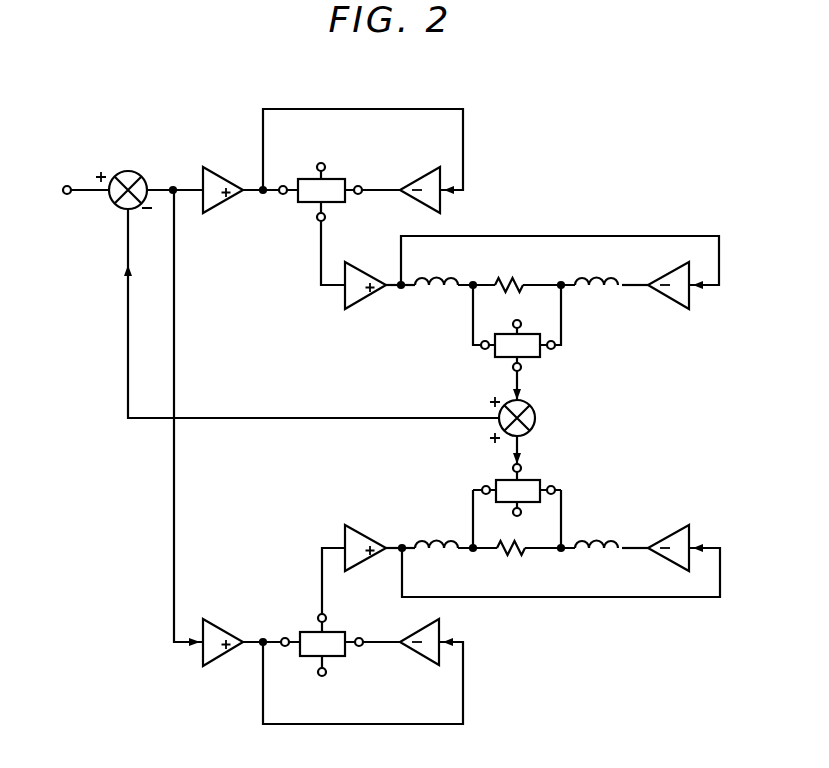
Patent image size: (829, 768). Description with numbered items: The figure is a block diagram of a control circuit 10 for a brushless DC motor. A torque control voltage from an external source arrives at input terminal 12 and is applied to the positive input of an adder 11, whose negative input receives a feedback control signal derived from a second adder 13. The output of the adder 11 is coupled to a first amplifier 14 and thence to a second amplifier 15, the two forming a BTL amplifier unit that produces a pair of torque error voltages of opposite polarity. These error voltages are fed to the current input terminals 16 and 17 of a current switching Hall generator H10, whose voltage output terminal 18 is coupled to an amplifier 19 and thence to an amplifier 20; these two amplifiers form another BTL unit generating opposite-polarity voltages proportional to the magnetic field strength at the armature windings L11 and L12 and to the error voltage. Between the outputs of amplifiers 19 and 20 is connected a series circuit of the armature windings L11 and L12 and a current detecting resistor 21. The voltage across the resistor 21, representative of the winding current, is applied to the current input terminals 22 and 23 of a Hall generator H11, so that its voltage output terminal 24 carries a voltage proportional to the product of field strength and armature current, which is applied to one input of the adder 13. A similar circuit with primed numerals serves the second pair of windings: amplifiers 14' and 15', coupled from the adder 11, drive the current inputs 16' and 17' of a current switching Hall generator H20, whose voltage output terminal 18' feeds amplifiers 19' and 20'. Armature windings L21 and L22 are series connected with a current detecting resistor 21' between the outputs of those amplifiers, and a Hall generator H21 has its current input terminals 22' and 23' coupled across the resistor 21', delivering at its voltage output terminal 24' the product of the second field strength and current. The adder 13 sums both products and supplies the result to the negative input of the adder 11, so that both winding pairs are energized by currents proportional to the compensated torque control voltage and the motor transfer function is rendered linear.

The control circuit 10 is at (302, 93).
The adder 11 is at (138, 178).
The input terminal 12 is at (67, 195).
The second adder 13 is at (535, 418).
The first amplifier 14 is at (223, 178).
The second amplifier 15 is at (419, 178).
The current input terminal 16 is at (283, 168).
The current input terminal 17 is at (358, 168).
The voltage output terminal 18 is at (340, 227).
The current switching Hall generator H10 is at (302, 202).
The amplifier 19 is at (367, 296).
The amplifier 20 is at (665, 296).
The current detecting resistor 21 is at (509, 270).
The armature winding L11 is at (436, 290).
The armature winding L12 is at (597, 290).
The current input terminal 22 is at (464, 352).
The current input terminal 23 is at (573, 352).
The voltage output terminal 24 is at (495, 378).
The Hall generator H11 is at (540, 357).
The voltage output terminal 24' is at (487, 455).
The Hall generator H21 is at (540, 480).
The current input terminal 22' is at (471, 477).
The current input terminal 23' is at (575, 483).
The amplifier 19' is at (366, 536).
The armature winding L21 is at (437, 543).
The current detecting resistor 21' is at (513, 565).
The armature winding L22 is at (599, 543).
The amplifier 20' is at (667, 537).
The amplifier 14' is at (223, 630).
The current input terminal 16' is at (281, 620).
The voltage output terminal 18' is at (341, 608).
The current switching Hall generator H20 is at (345, 656).
The current input terminal 17' is at (381, 625).
The amplifier 15' is at (445, 635).